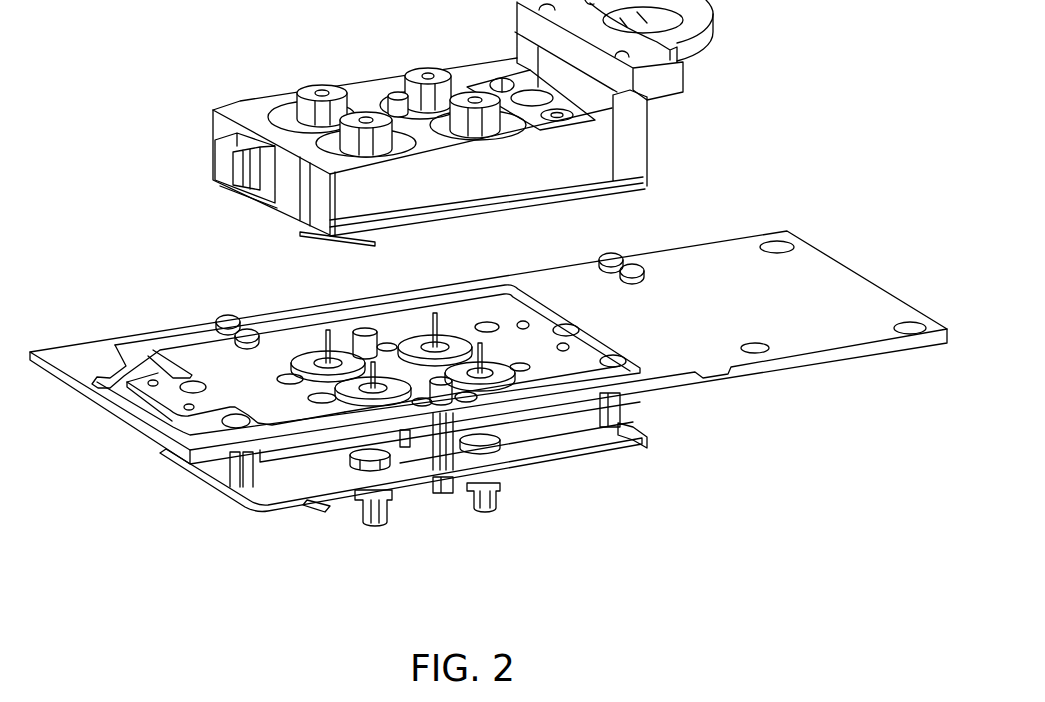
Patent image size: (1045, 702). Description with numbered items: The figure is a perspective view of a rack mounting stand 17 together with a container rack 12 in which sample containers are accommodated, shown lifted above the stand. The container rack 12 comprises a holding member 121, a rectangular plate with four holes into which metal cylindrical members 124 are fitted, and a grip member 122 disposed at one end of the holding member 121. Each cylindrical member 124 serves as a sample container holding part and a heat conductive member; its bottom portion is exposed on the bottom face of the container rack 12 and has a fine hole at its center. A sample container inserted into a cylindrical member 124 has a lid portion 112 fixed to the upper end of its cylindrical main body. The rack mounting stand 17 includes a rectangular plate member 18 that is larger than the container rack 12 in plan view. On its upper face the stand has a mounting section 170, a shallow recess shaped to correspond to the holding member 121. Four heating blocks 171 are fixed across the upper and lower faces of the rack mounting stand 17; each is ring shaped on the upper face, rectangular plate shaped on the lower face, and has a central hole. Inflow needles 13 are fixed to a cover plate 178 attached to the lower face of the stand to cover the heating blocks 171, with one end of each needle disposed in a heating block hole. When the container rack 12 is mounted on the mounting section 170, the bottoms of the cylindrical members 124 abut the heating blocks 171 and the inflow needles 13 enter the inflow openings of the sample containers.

The container rack 12 is at (505, 123).
The lid portion 112 is at (320, 92).
The holding member 121 is at (377, 89).
The grip member 122 is at (703, 40).
The cylindrical members 124 is at (290, 122).
The rack mounting stand 17 is at (488, 404).
The plate member 18 is at (672, 363).
The inflow needles 13 is at (310, 355).
The heating blocks 171 is at (453, 337).
The mounting section 170 is at (633, 433).
The cover plate 178 is at (283, 508).